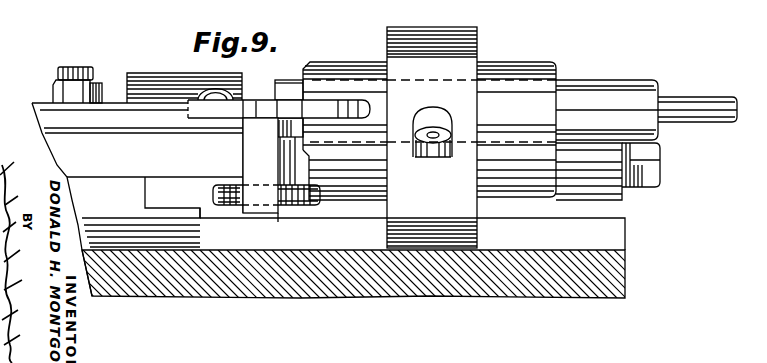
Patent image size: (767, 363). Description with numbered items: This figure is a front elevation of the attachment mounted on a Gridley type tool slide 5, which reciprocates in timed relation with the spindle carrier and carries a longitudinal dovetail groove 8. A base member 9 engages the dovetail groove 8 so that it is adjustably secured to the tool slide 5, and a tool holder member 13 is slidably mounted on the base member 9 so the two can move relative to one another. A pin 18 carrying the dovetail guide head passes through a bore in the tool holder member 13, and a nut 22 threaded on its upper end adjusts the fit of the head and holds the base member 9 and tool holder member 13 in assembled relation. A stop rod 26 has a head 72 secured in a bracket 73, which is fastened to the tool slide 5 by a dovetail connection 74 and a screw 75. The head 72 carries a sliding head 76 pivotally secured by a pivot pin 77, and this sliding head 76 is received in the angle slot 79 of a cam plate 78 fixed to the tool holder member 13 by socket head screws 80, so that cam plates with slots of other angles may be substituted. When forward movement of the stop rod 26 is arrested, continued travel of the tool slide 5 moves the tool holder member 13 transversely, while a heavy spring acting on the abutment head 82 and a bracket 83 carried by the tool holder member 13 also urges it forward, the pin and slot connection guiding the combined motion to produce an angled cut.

The tool slide 5 is at (622, 270).
The dovetail groove 8 is at (615, 234).
The base member 9 is at (136, 193).
The tool holder member 13 is at (42, 105).
The pin 18 is at (73, 68).
The nut 22 is at (97, 85).
The stop rod 26 is at (727, 122).
The head 72 is at (608, 85).
The bracket 73 is at (477, 33).
The dovetail connection 74 is at (477, 233).
The screw 75 is at (433, 151).
The sliding head 76 is at (288, 81).
The pivot pin 77 is at (322, 84).
The cam plate 78 is at (256, 110).
The angle slot 79 is at (243, 107).
The socket head screws 80 is at (212, 95).
The abutment head 82 is at (289, 207).
The bracket 83 is at (252, 211).